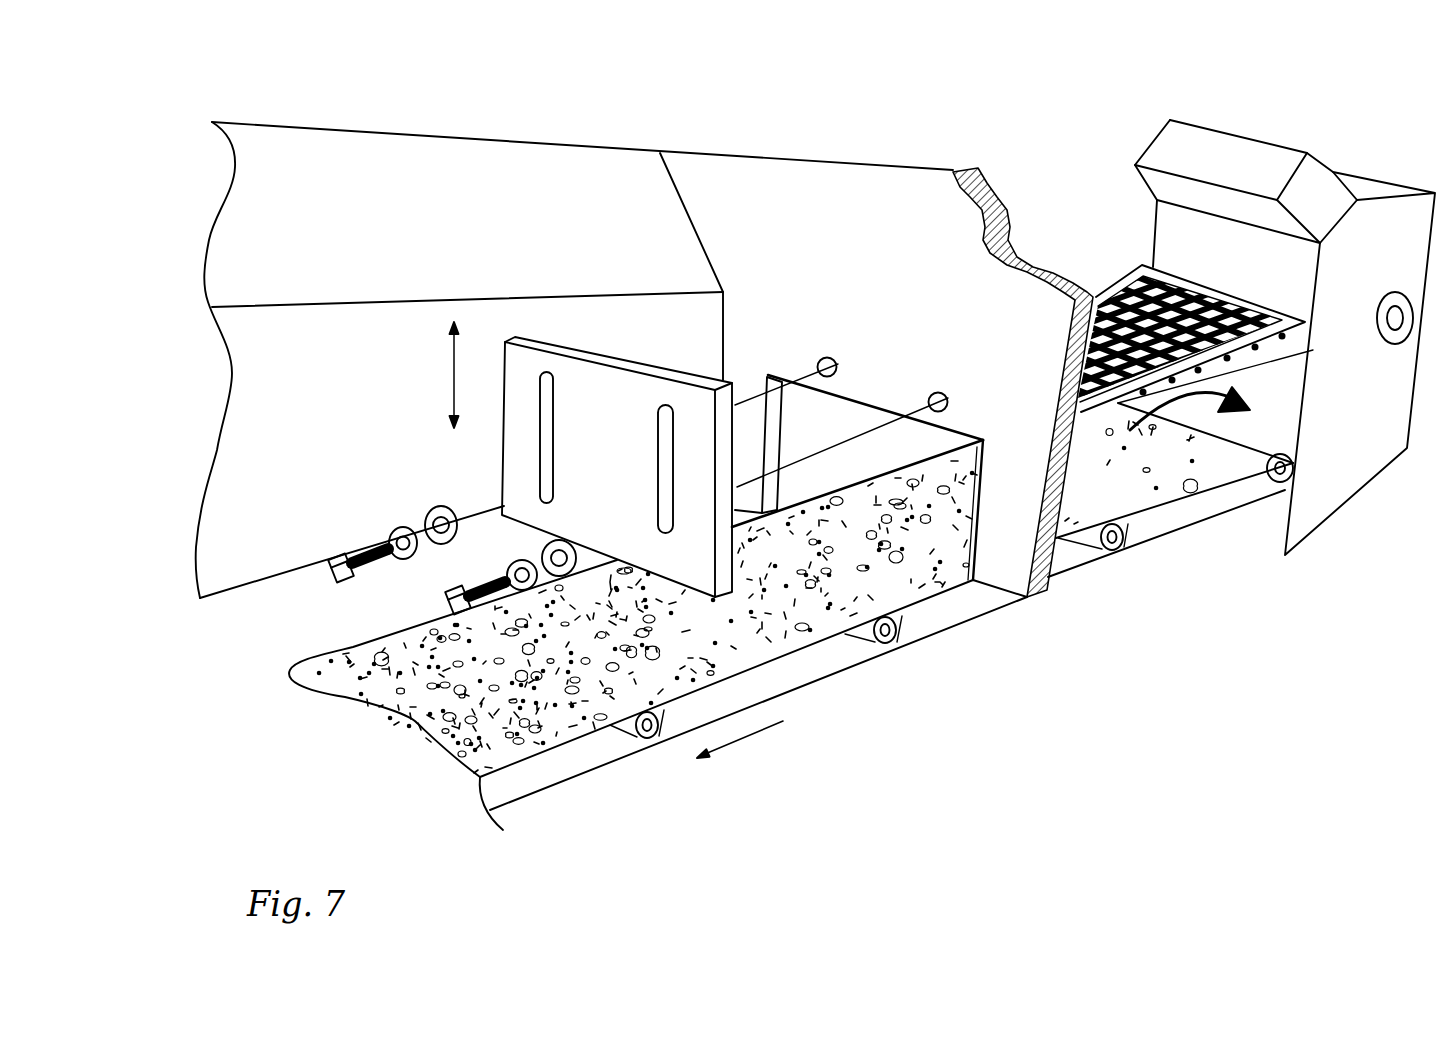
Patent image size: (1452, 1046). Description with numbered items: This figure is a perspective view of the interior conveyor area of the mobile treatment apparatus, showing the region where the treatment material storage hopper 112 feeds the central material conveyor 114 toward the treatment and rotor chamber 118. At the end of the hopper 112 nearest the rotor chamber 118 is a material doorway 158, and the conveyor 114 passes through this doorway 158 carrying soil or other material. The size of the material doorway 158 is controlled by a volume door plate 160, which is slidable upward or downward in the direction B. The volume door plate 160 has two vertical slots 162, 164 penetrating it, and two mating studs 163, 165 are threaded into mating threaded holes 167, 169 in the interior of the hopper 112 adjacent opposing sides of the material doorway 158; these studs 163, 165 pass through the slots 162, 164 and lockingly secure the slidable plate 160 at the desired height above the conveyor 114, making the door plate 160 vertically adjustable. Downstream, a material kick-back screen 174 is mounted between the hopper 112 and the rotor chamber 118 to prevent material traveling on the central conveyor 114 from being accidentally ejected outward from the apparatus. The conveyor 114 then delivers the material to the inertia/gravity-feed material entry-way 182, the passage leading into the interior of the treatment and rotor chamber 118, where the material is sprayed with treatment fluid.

The treatment material storage hopper 112 is at (745, 207).
The central material conveyor 114 is at (597, 710).
The treatment and rotor chamber 118 is at (1363, 187).
The material doorway 158 is at (887, 450).
The volume door plate 160 is at (603, 397).
The vertical slot 162 is at (672, 470).
The mating stud 163 is at (447, 601).
The vertical slot 164 is at (535, 405).
The mating stud 165 is at (350, 552).
The threaded hole 167 is at (936, 393).
The threaded hole 169 is at (829, 358).
The material kick-back screen 174 is at (1108, 298).
The inertia/gravity-feed material entry-way 182 is at (1268, 418).
The upward or downward adjustment direction B is at (453, 373).